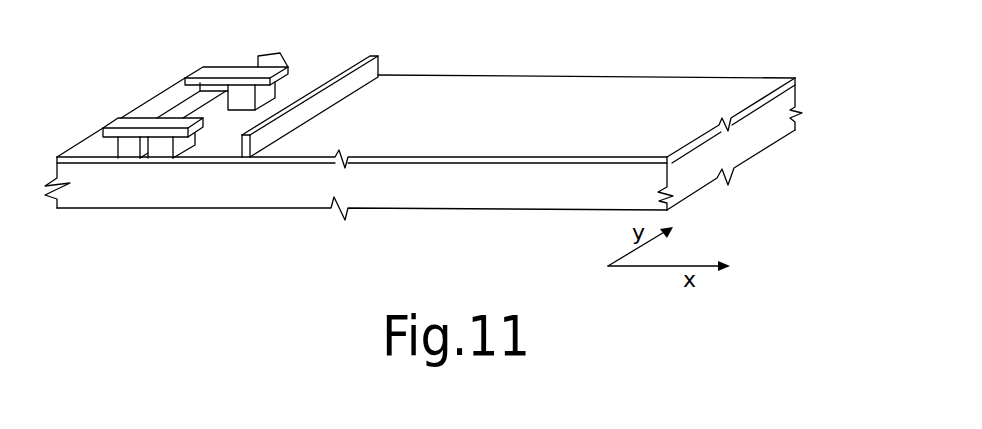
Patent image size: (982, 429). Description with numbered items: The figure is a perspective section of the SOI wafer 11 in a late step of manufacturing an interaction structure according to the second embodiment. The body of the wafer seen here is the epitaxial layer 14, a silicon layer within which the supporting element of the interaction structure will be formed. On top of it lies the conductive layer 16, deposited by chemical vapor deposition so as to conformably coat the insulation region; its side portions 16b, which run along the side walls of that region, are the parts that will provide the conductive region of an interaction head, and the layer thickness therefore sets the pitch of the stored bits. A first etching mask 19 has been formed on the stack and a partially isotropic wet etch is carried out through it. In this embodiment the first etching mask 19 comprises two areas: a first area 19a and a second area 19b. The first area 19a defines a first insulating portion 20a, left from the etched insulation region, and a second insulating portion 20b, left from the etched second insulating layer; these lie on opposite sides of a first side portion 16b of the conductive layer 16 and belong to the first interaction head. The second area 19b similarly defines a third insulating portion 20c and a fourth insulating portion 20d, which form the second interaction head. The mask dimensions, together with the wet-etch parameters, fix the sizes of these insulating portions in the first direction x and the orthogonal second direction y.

The SOI wafer 11 is at (815, 128).
The epitaxial layer 14 is at (700, 177).
The conductive layer 16 is at (797, 80).
The side portion of the conductive layer 16b is at (370, 70).
The first etching mask 19 is at (297, 63).
The first area of the first etching mask 19a is at (127, 125).
The second area of the first etching mask 19b is at (218, 70).
The first insulating portion 20a is at (162, 150).
The second insulating portion 20b is at (128, 146).
The third insulating portion 20c is at (183, 88).
The fourth insulating portion 20d is at (268, 90).